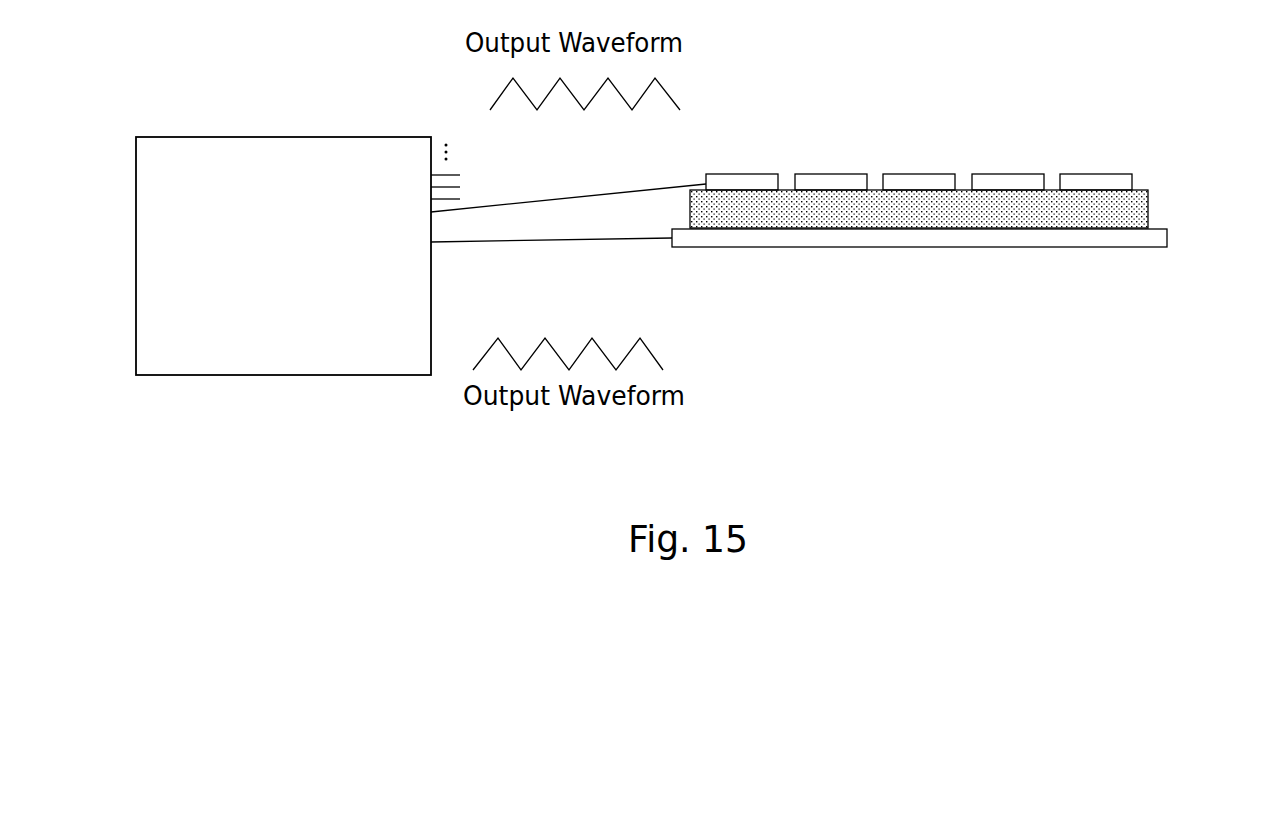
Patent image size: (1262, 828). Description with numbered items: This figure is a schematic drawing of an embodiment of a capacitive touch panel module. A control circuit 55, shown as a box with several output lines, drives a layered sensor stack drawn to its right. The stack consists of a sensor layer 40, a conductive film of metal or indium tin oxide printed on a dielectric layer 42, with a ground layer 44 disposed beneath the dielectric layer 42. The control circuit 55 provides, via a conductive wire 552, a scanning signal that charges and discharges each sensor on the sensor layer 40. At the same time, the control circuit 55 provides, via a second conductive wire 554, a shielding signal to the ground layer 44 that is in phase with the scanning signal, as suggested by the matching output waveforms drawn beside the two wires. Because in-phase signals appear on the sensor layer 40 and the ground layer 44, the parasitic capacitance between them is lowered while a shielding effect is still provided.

The control circuit 55 is at (282, 137).
The conductive wire 552 is at (584, 196).
The conductive wire 554 is at (561, 243).
The sensor layer 40 is at (1093, 178).
The dielectric layer 42 is at (1137, 208).
The ground layer 44 is at (1160, 237).